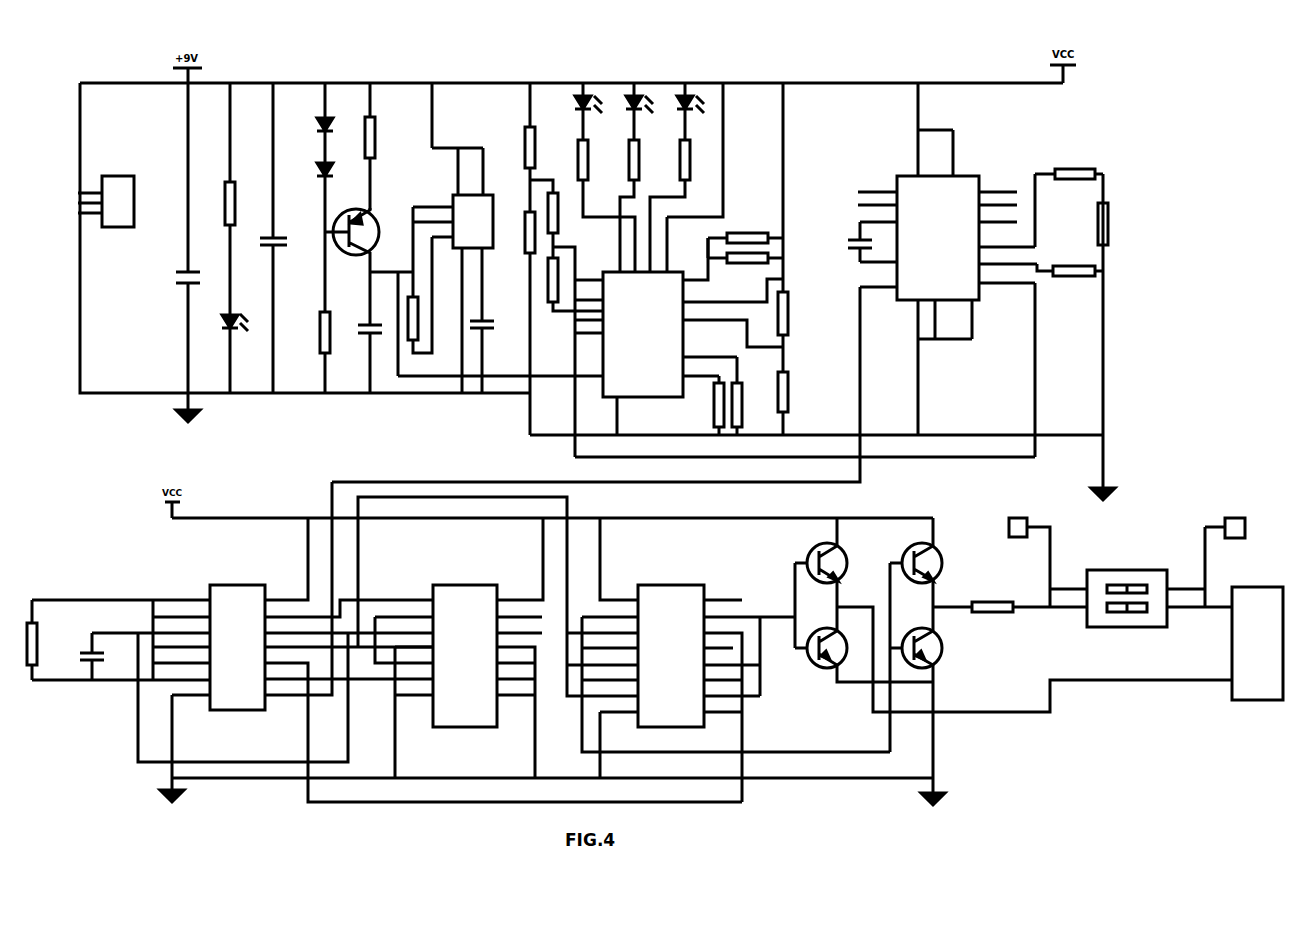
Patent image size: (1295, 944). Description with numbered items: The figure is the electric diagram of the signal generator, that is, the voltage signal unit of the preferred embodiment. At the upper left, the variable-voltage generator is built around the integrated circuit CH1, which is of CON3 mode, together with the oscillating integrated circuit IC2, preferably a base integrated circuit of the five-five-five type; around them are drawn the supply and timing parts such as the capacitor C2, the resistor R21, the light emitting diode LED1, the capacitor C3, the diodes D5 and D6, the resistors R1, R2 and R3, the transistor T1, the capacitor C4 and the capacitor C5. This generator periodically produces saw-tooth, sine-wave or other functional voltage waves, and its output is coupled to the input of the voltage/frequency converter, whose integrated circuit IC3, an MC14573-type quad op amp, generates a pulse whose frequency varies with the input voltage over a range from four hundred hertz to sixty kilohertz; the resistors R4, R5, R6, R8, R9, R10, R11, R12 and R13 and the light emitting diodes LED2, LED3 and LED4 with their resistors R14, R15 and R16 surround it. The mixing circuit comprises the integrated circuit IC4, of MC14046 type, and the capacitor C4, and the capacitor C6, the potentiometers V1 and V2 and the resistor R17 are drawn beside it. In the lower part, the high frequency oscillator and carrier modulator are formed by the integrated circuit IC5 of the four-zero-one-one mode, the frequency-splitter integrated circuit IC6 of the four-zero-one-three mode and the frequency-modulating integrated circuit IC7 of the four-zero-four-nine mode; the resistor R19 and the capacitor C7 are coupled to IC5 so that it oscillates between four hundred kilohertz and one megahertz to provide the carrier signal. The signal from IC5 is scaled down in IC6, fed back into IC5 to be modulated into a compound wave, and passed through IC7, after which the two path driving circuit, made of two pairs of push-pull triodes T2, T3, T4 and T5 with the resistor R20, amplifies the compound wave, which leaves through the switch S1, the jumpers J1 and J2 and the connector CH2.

The integrated circuit CH1 is at (106, 200).
The capacitor C2 is at (182, 299).
The resistor R21 is at (229, 198).
The light emitting diode LED1 is at (235, 339).
The capacitor C3 is at (270, 238).
The diode D5 is at (326, 123).
The diode D6 is at (326, 191).
The resistor R1 is at (324, 312).
The resistor R2 is at (367, 146).
The transistor T1 is at (357, 231).
The capacitor C4 is at (369, 332).
The resistor R3 is at (414, 280).
The oscillating integrated circuit IC2 is at (453, 238).
The capacitor C5 is at (485, 345).
The resistor R4 is at (520, 147).
The resistor R5 is at (520, 323).
The resistor R6 is at (555, 240).
The light emitting diode LED2 is at (577, 111).
The light emitting diode LED3 is at (628, 111).
The light emitting diode LED4 is at (680, 111).
The resistor R14 is at (600, 206).
The resistor R15 is at (633, 206).
The resistor R16 is at (675, 206).
The integrated circuit IC3 is at (590, 270).
The resistor R10 is at (745, 187).
The resistor R11 is at (745, 270).
The resistor R12 is at (796, 332).
The resistor R13 is at (796, 403).
The resistor R8 is at (712, 405).
The resistor R9 is at (750, 396).
The integrated circuit IC4 is at (947, 259).
The capacitor C6 is at (854, 242).
The potentiometer V1 is at (1069, 201).
The resistor R17 is at (1115, 224).
The potentiometer V2 is at (1070, 272).
The resistor R19 is at (118, 640).
The capacitor C7 is at (140, 664).
The integrated circuit IC5 is at (440, 642).
The integrated circuit IC6 is at (498, 637).
The integrated circuit IC7 is at (736, 660).
The push-pull triode T2 is at (840, 562).
The push-pull triode T3 is at (936, 562).
The push-pull triode T4 is at (861, 649).
The push-pull triode T5 is at (936, 700).
The resistor R20 is at (991, 608).
The jumper J1 is at (1029, 555).
The jumper J2 is at (1225, 555).
The switch S1 is at (1141, 590).
The connector CH2 is at (1249, 651).